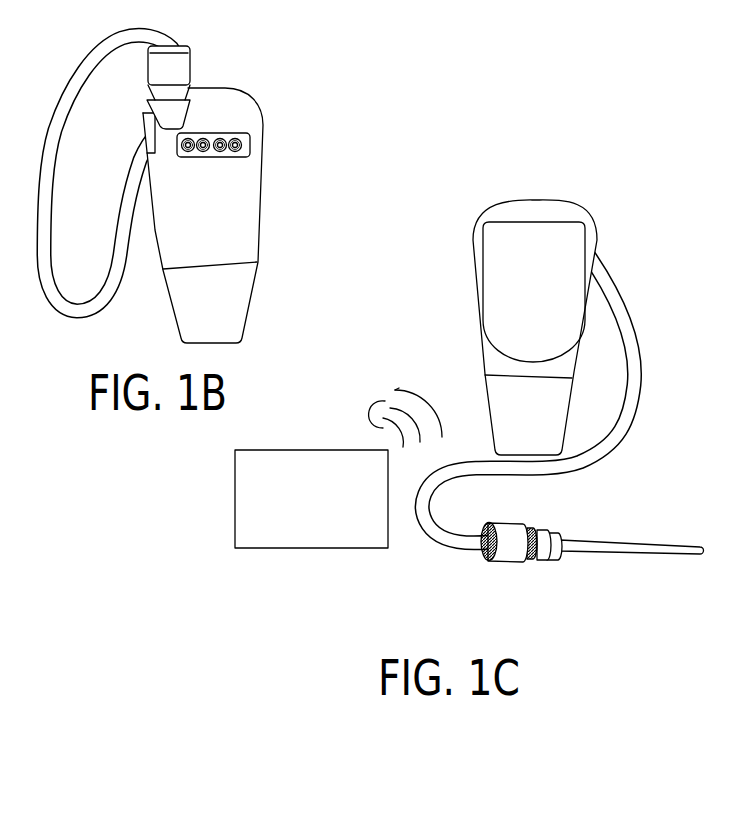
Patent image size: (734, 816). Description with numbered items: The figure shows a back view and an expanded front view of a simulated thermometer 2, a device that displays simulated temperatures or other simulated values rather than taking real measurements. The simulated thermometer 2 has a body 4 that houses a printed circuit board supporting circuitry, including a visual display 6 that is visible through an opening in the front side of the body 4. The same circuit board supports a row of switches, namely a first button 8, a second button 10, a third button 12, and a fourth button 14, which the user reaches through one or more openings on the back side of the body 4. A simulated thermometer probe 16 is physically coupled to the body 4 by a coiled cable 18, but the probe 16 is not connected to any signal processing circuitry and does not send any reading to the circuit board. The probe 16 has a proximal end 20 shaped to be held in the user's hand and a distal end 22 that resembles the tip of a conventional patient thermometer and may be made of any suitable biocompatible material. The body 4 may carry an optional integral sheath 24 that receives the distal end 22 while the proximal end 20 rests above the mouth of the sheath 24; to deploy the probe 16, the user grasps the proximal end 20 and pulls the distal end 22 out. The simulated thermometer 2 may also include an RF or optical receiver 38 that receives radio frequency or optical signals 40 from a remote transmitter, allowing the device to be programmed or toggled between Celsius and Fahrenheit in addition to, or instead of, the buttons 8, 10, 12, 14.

In FIG. 1B, the simulated thermometer 2 is at (240, 181).
In FIG. 1C, the simulated thermometer 2 is at (500, 305).
In FIG. 1B, the body 4 is at (253, 285).
In FIG. 1C, the body 4 is at (485, 388).
In FIG. 1C, the visual display 6 is at (480, 283).
In FIG. 1B, the first button 8 is at (187, 157).
In FIG. 1B, the second button 10 is at (236, 136).
In FIG. 1B, the third button 12 is at (222, 157).
In FIG. 1B, the fourth button 14 is at (248, 144).
In FIG. 1B, the simulated thermometer probe 16 is at (126, 69).
In FIG. 1C, the simulated thermometer probe 16 is at (592, 564).
In FIG. 1C, the coiled cable 18 is at (633, 314).
In FIG. 1C, the proximal end 20 is at (505, 523).
In FIG. 1C, the distal end 22 is at (660, 547).
In FIG. 1B, the integral sheath 24 is at (190, 99).
In FIG. 1C, the RF or optical receiver 38 is at (308, 548).
In FIG. 1C, the radio frequency or optical signals 40 is at (397, 415).